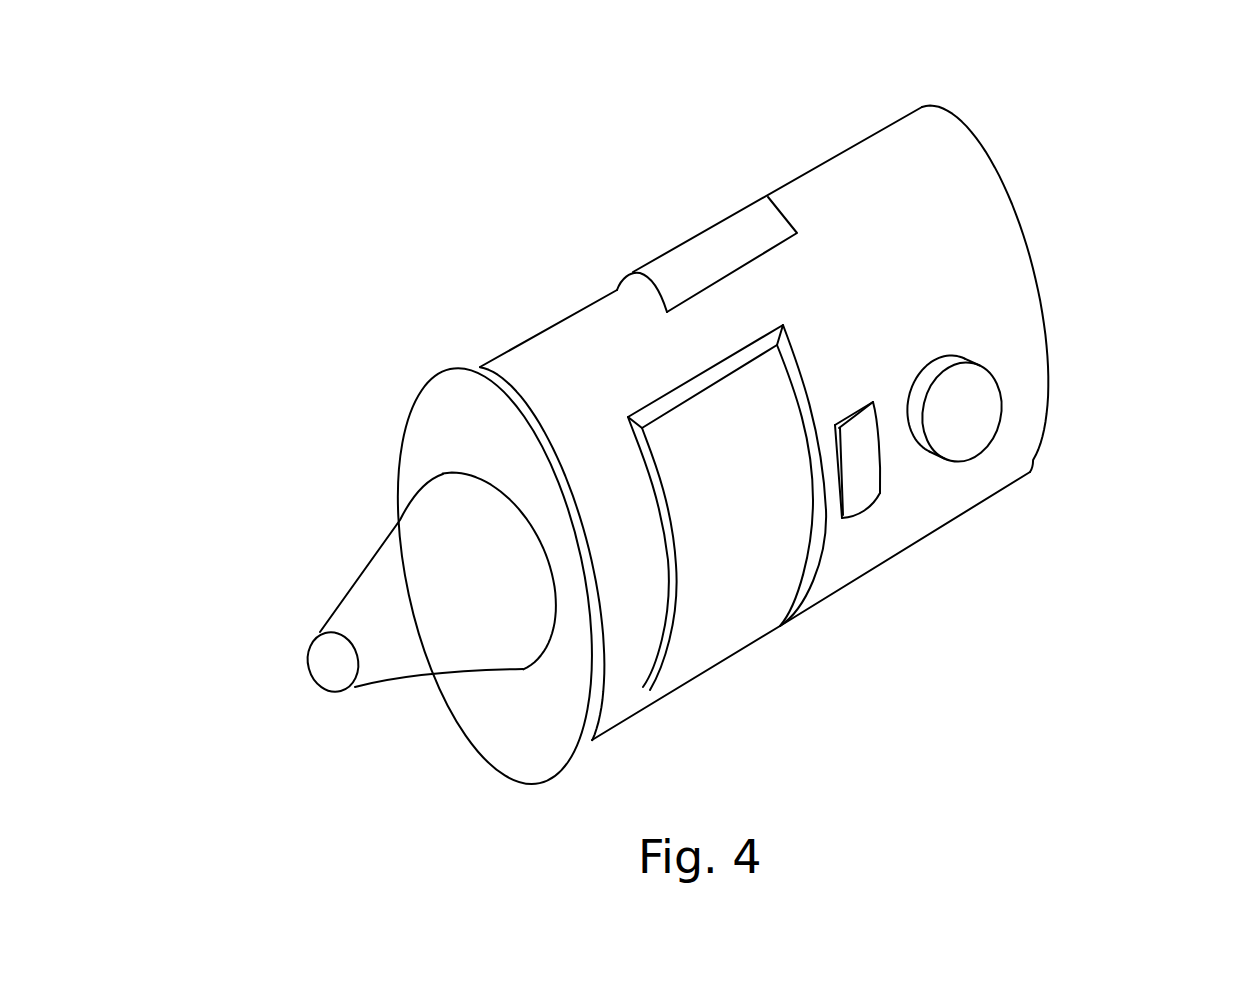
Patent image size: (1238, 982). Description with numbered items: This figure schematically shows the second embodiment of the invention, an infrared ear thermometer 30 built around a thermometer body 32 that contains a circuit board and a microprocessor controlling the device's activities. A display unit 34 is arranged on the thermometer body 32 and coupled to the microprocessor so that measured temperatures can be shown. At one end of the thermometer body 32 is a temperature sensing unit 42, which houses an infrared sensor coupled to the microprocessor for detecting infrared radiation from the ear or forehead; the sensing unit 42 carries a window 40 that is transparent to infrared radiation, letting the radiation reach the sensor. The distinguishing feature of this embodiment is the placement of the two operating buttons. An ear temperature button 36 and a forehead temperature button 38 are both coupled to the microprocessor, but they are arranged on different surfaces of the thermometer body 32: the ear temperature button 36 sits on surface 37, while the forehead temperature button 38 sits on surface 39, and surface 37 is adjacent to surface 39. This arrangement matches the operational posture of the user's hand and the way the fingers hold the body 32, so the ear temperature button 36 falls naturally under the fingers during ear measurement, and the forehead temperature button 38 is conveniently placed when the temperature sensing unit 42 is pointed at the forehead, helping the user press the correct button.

The infrared ear thermometer 30 is at (270, 292).
The thermometer body 32 is at (1037, 278).
The display unit 34 is at (727, 597).
The ear temperature button 36 is at (713, 228).
The surface 37 is at (858, 195).
The forehead temperature button 38 is at (862, 473).
The surface 39 is at (998, 454).
The window 40 is at (332, 672).
The temperature sensing unit 42 is at (368, 607).